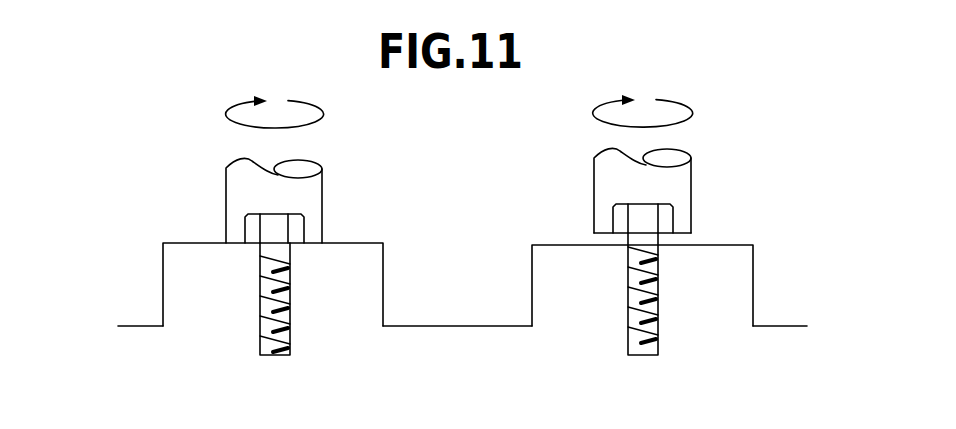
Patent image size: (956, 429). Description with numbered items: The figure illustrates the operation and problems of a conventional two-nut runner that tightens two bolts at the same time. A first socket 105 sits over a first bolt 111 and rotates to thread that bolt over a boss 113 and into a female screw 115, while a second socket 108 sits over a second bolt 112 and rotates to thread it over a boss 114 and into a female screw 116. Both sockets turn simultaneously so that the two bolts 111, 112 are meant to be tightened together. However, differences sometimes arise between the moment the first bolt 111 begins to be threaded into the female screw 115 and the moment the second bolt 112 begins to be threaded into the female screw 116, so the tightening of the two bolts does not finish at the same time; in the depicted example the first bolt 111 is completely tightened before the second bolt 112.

The first socket 105 is at (226, 197).
The second socket 108 is at (594, 192).
The first bolt 111 is at (295, 213).
The second bolt 112 is at (667, 204).
The boss 113 is at (163, 296).
The boss 114 is at (532, 297).
The female screw 115 is at (260, 312).
The female screw 116 is at (628, 316).